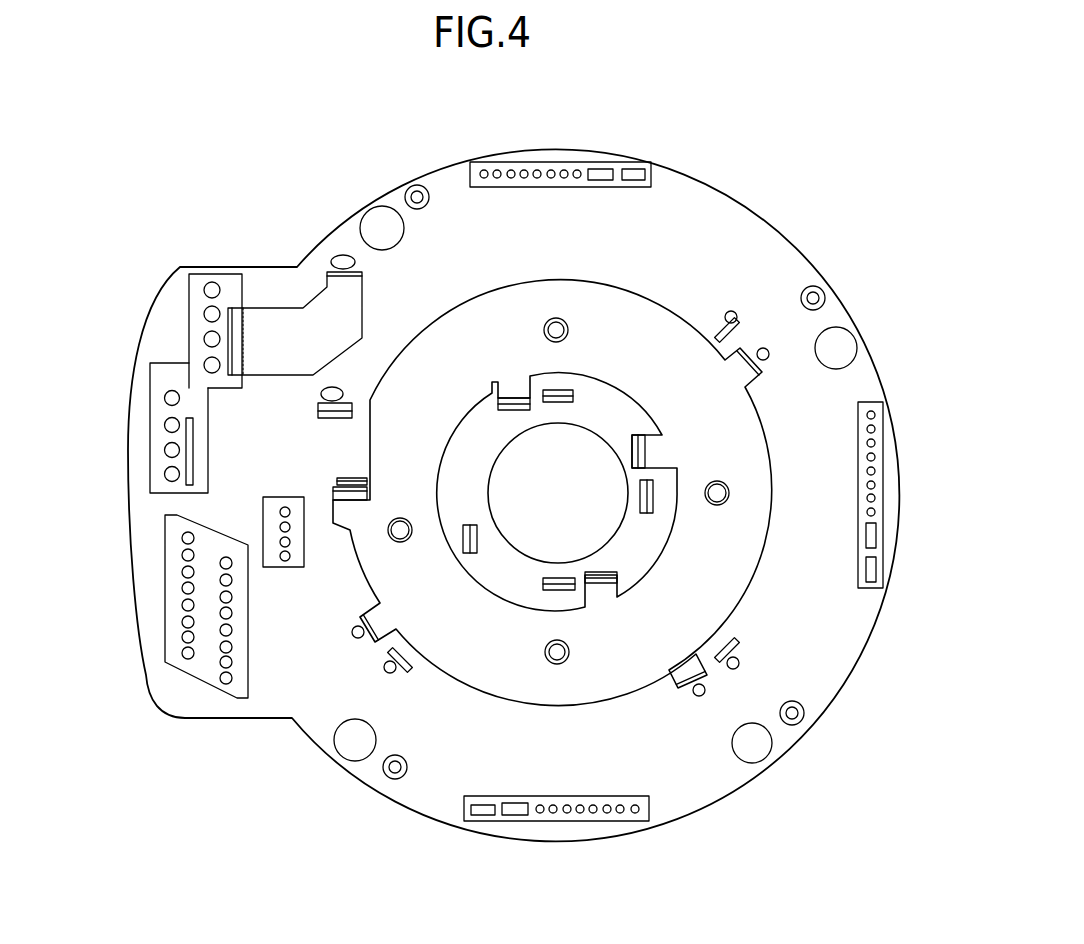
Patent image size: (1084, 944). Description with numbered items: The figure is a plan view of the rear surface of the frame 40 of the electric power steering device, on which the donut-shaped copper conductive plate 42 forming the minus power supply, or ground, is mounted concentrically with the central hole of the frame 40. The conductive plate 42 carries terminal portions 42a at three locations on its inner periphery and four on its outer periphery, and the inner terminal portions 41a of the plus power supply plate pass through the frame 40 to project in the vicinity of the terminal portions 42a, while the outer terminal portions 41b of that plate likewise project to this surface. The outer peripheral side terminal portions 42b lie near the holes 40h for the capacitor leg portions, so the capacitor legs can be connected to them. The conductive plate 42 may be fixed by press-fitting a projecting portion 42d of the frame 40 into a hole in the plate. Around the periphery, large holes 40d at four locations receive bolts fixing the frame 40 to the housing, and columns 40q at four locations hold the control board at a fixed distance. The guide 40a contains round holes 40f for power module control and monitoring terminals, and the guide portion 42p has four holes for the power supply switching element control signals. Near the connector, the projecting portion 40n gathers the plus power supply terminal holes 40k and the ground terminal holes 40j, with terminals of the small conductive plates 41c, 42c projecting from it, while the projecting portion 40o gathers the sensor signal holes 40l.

The frame 40 is at (766, 208).
The guide 40a is at (572, 163).
The holes 40d is at (852, 337).
The round holes 40f is at (537, 172).
The holes 40h is at (702, 697).
The minus power supply (ground) terminal holes 40j is at (166, 470).
The plus power supply terminal holes 40k is at (200, 312).
The sensor signal holes 40l is at (186, 656).
The projecting portion 40n is at (198, 276).
The projecting portion 40o is at (235, 697).
The columns 40q is at (793, 726).
The terminal portions 41a is at (548, 594).
The terminal portions 41b is at (741, 660).
The small conductive plate 41c is at (308, 295).
The conductive plate 42 is at (752, 585).
The terminal portions 42a is at (518, 396).
The outer peripheral side terminal portions 42b is at (688, 692).
The small conductive plate 42c is at (186, 485).
The projecting portion 42d is at (724, 486).
The guide portion 42p is at (263, 552).